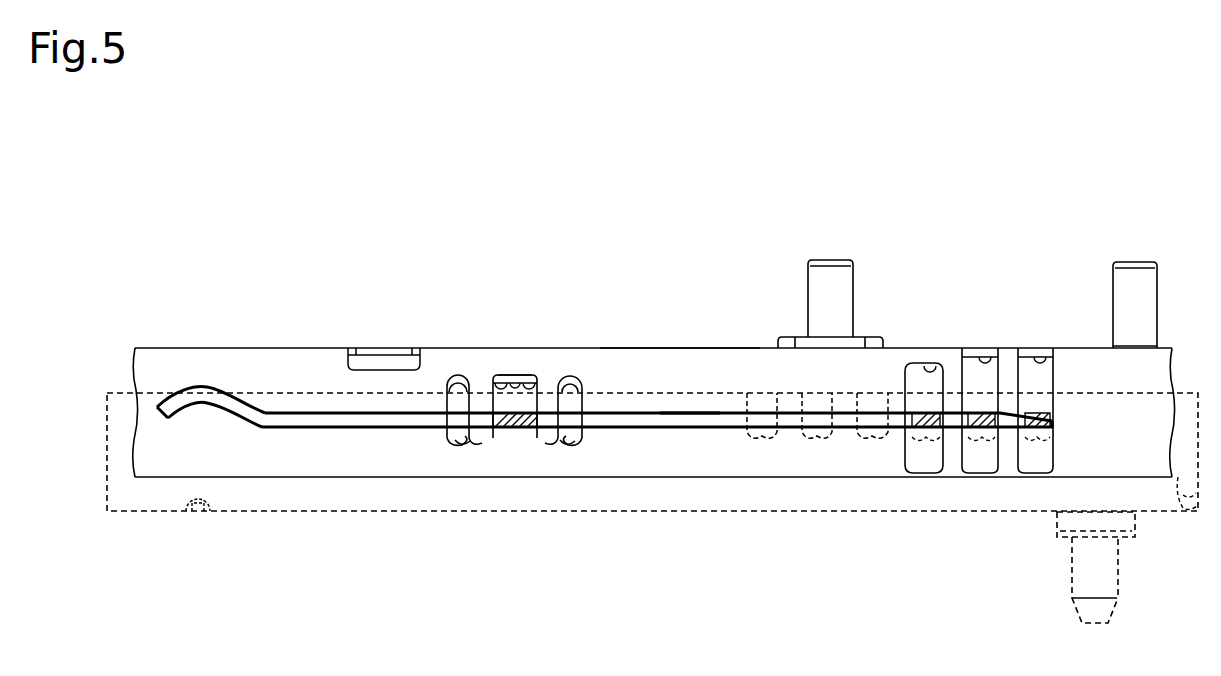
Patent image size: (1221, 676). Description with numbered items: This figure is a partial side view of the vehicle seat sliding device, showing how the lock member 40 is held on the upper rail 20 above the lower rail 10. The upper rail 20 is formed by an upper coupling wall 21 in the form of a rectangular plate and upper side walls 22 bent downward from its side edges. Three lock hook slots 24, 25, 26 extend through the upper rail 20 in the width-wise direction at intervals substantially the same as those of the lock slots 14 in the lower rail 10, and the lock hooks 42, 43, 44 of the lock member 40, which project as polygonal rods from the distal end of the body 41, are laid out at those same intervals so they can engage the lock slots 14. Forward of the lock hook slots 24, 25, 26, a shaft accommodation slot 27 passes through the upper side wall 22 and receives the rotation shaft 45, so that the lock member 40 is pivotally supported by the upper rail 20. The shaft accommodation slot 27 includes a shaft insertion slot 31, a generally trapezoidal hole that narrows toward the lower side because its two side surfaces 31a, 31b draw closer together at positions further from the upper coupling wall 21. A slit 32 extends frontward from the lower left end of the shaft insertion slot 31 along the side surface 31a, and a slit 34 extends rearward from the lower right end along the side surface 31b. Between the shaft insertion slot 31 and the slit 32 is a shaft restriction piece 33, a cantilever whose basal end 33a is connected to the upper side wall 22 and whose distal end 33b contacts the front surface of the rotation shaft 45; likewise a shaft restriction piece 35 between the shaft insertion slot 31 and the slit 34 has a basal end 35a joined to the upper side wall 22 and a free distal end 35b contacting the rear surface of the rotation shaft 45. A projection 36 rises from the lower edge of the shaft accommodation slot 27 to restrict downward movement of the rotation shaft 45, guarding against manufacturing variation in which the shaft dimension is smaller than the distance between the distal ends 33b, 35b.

The lower rail 10 is at (270, 512).
The lock slot 14 is at (748, 398).
The upper rail 20 is at (265, 347).
The upper coupling wall 21 is at (683, 347).
The upper side wall 22 is at (302, 357).
The lock hook slot 24 is at (930, 363).
The lock hook slot 25 is at (985, 357).
The lock hook slot 26 is at (1040, 358).
The shaft accommodation slot 27 is at (478, 380).
The shaft insertion slot 31 is at (515, 375).
The side surface 31a is at (497, 377).
The side surface 31b is at (535, 377).
The slit 32 is at (460, 444).
The shaft restriction piece 33 is at (481, 442).
The basal end 33a is at (447, 385).
The distal end 33b is at (489, 443).
The slit 34 is at (565, 446).
The shaft restriction piece 35 is at (548, 444).
The basal end 35a is at (578, 380).
The distal end 35b is at (558, 444).
The projection 36 is at (511, 440).
The lock member 40 is at (628, 411).
The body 41 is at (685, 411).
The lock hook 42 is at (925, 438).
The lock hook 43 is at (978, 438).
The lock hook 44 is at (1033, 438).
The rotation shaft 45 is at (512, 416).